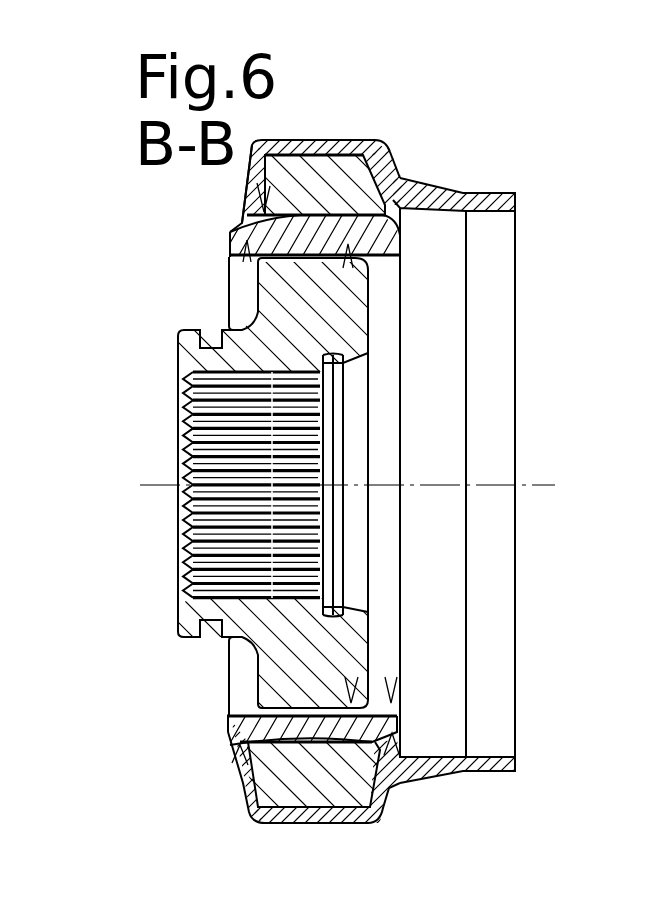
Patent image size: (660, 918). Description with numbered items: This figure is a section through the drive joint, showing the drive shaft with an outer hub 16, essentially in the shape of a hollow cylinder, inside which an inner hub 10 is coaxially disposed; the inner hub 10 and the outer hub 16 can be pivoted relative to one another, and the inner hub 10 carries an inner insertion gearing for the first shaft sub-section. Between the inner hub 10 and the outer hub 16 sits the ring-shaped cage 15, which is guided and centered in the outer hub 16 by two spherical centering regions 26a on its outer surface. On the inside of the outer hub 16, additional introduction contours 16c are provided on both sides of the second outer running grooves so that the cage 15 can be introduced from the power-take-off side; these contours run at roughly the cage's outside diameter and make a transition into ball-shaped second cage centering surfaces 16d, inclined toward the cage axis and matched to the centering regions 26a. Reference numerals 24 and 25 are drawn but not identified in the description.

The inner hub 10 is at (340, 300).
The ring-shaped cage 15 is at (346, 237).
The outer hub 16 is at (313, 183).
The additional introduction contours 16c is at (394, 180).
The second cage centering surfaces 16d is at (243, 185).
The lower seal carrier 24 is at (348, 672).
The lower sealing ring 25 is at (392, 655).
The centering regions 26a is at (413, 777).